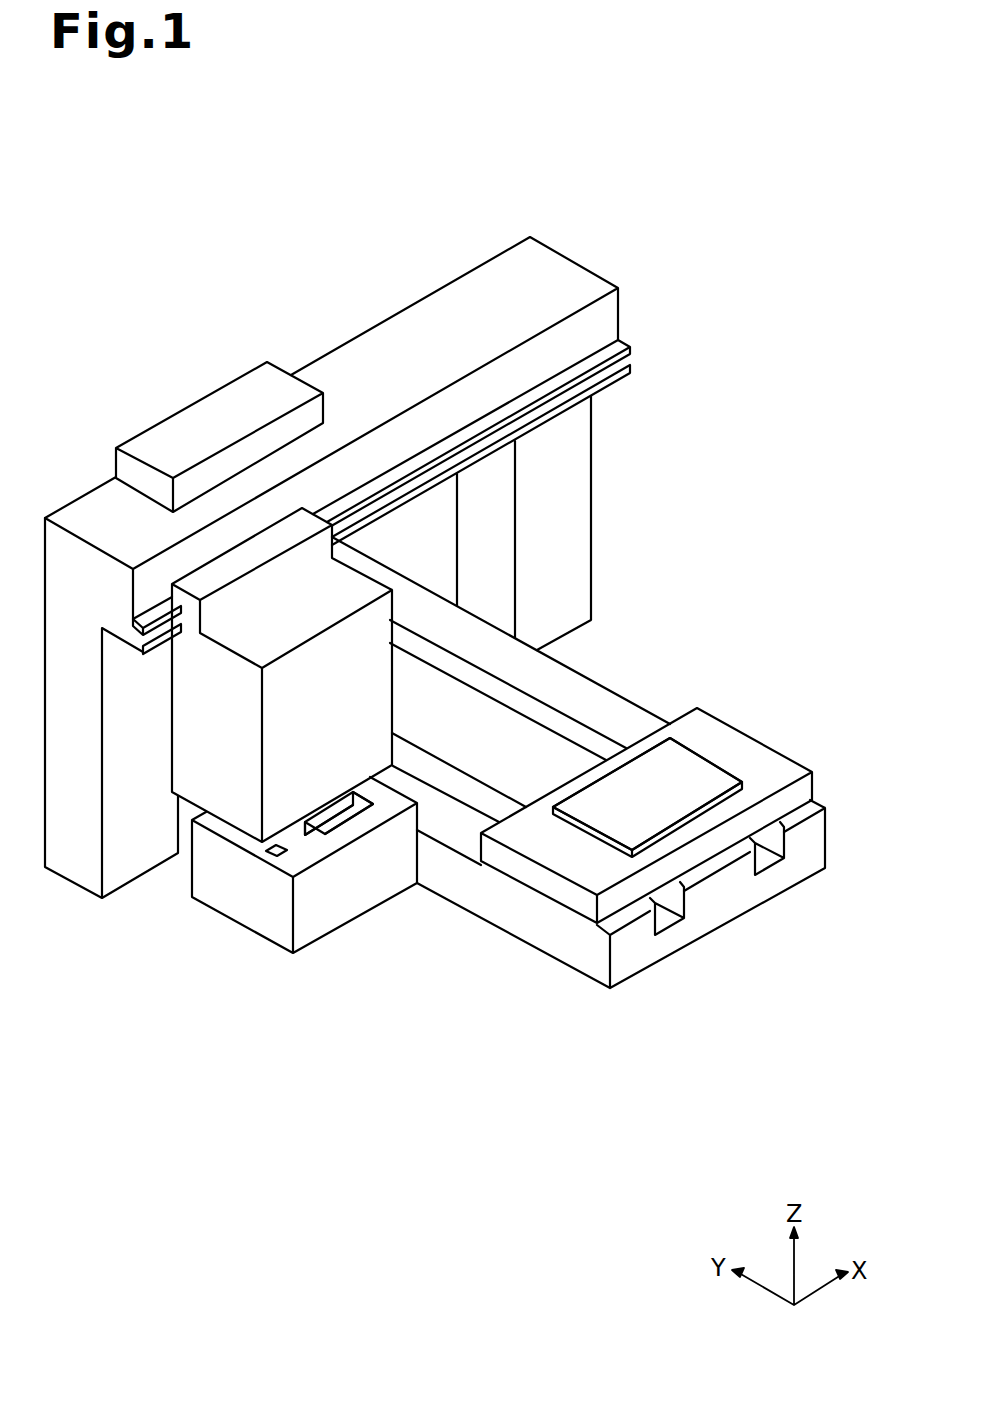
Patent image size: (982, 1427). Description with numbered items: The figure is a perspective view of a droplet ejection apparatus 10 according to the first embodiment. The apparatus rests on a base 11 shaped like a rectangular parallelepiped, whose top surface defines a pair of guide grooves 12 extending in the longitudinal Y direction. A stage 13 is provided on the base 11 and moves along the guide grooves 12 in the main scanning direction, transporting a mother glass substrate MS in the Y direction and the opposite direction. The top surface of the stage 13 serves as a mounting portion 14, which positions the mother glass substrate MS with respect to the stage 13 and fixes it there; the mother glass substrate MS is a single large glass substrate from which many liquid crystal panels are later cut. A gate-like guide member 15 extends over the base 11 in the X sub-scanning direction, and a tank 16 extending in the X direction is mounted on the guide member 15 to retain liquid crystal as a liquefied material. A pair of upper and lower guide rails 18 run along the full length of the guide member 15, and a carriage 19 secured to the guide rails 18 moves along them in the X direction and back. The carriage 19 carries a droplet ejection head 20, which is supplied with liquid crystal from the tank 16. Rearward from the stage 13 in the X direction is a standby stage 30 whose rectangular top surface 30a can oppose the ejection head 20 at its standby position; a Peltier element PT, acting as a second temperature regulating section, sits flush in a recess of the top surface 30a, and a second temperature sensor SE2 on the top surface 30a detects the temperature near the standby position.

The droplet ejection apparatus 10 is at (722, 513).
The base 11 is at (831, 838).
The guide grooves 12 is at (770, 861).
The stage 13 is at (785, 752).
The mounting portion 14 is at (706, 722).
The mother glass substrate MS is at (690, 768).
The guide member 15 is at (583, 266).
The tank 16 is at (235, 393).
The guide rails 18 is at (632, 349).
The carriage 19 is at (220, 806).
The droplet ejection head 20 is at (318, 827).
The standby stage 30 is at (334, 920).
The top surface 30a is at (344, 834).
The Peltier element PT is at (363, 808).
The second temperature sensor SE2 is at (272, 854).